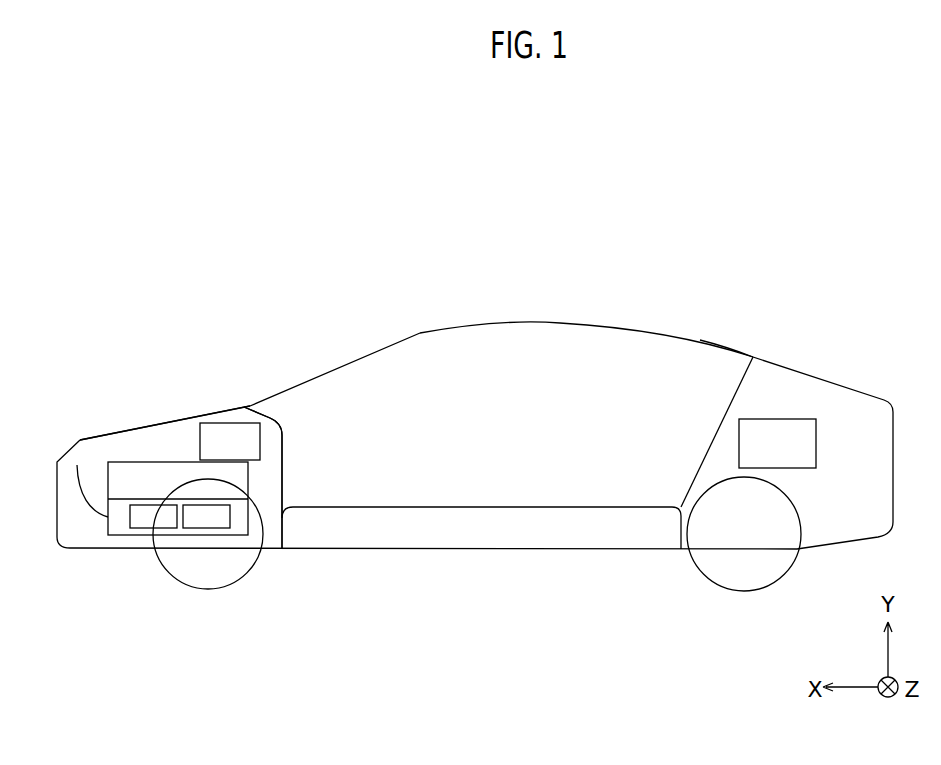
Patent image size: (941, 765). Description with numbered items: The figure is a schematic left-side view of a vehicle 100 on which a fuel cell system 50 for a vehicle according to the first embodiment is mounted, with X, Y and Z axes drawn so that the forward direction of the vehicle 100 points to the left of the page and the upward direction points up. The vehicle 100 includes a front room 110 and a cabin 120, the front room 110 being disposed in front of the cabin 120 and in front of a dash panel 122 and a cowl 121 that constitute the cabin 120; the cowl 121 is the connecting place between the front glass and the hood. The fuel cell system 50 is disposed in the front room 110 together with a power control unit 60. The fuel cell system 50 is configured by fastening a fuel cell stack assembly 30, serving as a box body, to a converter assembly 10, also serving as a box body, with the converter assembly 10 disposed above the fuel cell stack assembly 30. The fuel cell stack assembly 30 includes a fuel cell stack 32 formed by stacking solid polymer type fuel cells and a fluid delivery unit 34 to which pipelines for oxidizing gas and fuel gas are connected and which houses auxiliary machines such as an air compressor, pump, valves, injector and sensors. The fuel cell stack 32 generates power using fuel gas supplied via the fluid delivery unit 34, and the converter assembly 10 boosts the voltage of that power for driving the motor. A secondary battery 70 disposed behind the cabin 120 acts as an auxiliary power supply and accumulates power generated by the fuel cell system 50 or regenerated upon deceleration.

The vehicle 100 is at (772, 262).
The front room 110 is at (168, 440).
The cabin 120 is at (717, 363).
The cowl 121 is at (273, 417).
The dash panel 122 is at (282, 467).
The power control unit 60 is at (212, 421).
The secondary battery 70 is at (788, 418).
The fuel cell system 50 is at (155, 430).
The fuel cell stack assembly 30 is at (77, 465).
The converter assembly 10 is at (178, 453).
The fuel cell stack 32 is at (153, 518).
The fluid delivery unit 34 is at (206, 518).